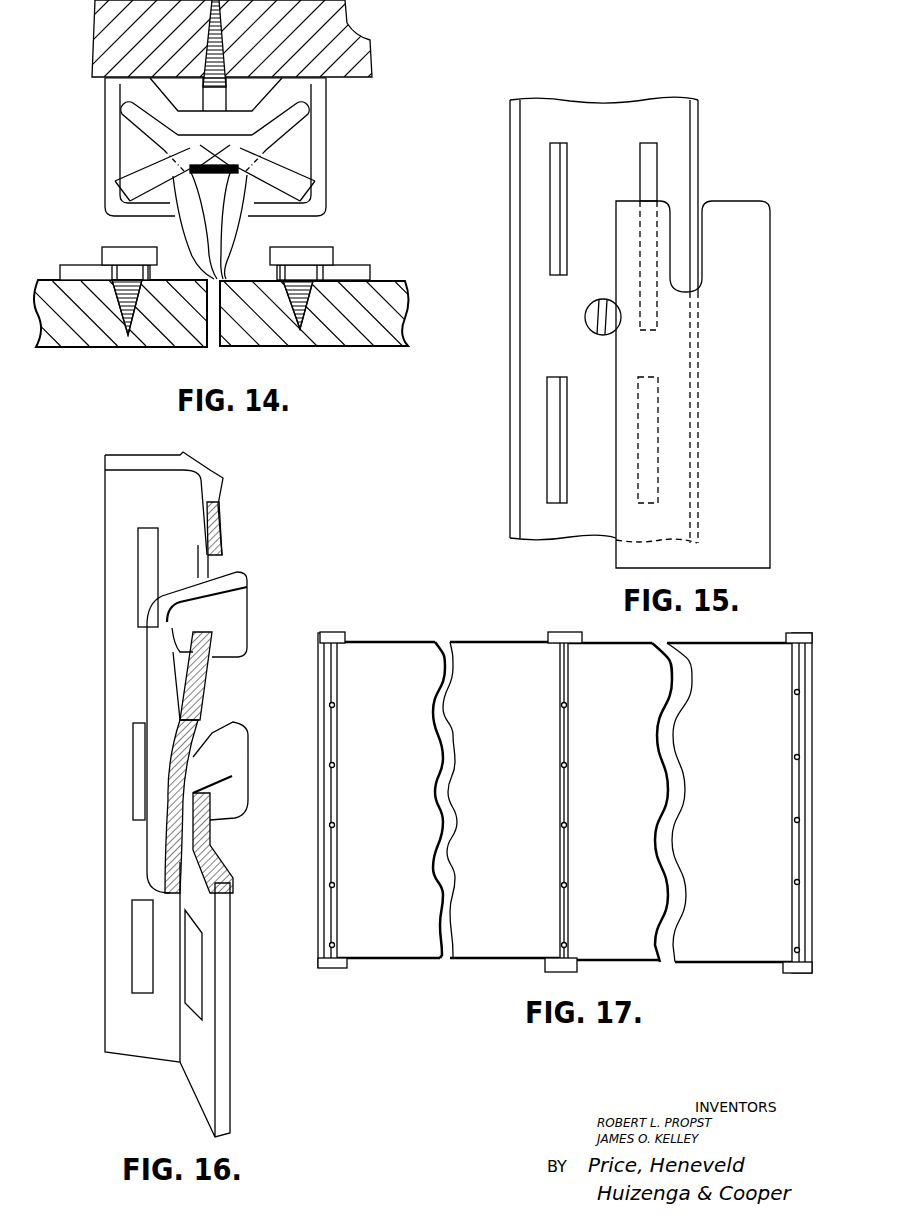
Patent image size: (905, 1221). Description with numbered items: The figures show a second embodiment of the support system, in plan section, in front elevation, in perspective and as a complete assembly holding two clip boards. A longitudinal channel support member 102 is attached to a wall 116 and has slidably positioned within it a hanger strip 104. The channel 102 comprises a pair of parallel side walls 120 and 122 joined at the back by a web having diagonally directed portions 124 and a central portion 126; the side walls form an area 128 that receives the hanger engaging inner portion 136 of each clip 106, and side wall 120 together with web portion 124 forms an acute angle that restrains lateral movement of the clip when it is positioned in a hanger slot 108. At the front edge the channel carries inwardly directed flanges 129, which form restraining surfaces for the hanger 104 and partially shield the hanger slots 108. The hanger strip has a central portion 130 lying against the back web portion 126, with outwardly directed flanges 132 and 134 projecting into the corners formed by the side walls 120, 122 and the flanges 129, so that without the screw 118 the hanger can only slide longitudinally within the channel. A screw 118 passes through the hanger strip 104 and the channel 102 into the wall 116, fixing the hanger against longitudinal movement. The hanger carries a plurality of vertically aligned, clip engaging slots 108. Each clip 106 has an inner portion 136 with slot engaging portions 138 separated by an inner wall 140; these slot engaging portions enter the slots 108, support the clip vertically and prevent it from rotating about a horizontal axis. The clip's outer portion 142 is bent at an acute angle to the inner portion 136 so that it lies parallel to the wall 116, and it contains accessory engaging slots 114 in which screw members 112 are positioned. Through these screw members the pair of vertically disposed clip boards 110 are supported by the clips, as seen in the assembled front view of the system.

In FIG. 14, the longitudinal channel support member 102 is at (214, 178).
In FIG. 16, the longitudinal channel support member 102 is at (229, 728).
In FIG. 17, the longitudinal channel support member 102 is at (554, 773).
In FIG. 14, the hanger strip 104 is at (122, 179).
In FIG. 15, the hanger strip 104 is at (588, 301).
In FIG. 14, the clip 106 is at (96, 297).
In FIG. 14, the slot 108 is at (157, 168).
In FIG. 15, the slot 108 is at (553, 208).
In FIG. 16, the slot 108 is at (205, 562).
In FIG. 14, the clip board 110 is at (60, 333).
In FIG. 17, the clip board 110 is at (395, 806).
In FIG. 14, the screw member 112 is at (113, 247).
In FIG. 14, the accessory supporting slot 114 is at (150, 273).
In FIG. 15, the accessory supporting slot 114 is at (700, 233).
In FIG. 14, the wall 116 is at (343, 40).
In FIG. 14, the screw 118 is at (216, 44).
In FIG. 15, the screw 118 is at (585, 319).
In FIG. 17, the screw 118 is at (322, 640).
In FIG. 14, the side wall 120 is at (108, 105).
In FIG. 14, the side wall 122 is at (328, 122).
In FIG. 14, the diagonally directed web portion 124 is at (180, 107).
In FIG. 14, the central web portion 126 is at (226, 135).
In FIG. 14, the area 128 is at (133, 108).
In FIG. 14, the inwardly directed flange 129 is at (113, 218).
In FIG. 14, the central portion 130 is at (224, 155).
In FIG. 16, the central portion 130 is at (207, 465).
In FIG. 17, the central portion 130 is at (332, 630).
In FIG. 14, the outwardly directed flange 132 is at (140, 187).
In FIG. 15, the outwardly directed flange 132 is at (540, 112).
In FIG. 16, the outwardly directed flange 132 is at (120, 452).
In FIG. 14, the outwardly directed flange 134 is at (290, 183).
In FIG. 15, the outwardly directed flange 134 is at (653, 107).
In FIG. 14, the inner portion 136 is at (133, 117).
In FIG. 16, the inner portion 136 is at (233, 593).
In FIG. 16, the slot engaging portion 138 is at (205, 632).
In FIG. 14, the inner wall 140 is at (350, 333).
In FIG. 16, the inner wall 140 is at (187, 670).
In FIG. 14, the outer portion 142 is at (320, 255).
In FIG. 15, the outer portion 142 is at (747, 280).